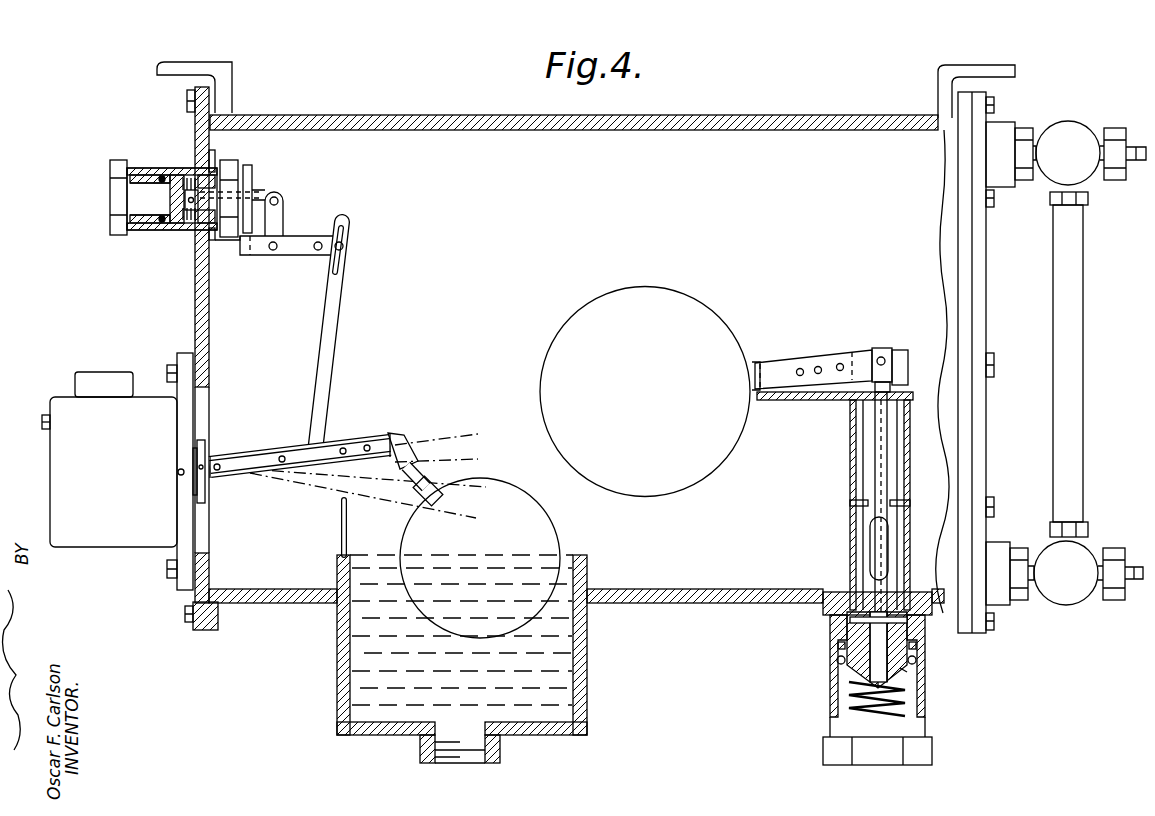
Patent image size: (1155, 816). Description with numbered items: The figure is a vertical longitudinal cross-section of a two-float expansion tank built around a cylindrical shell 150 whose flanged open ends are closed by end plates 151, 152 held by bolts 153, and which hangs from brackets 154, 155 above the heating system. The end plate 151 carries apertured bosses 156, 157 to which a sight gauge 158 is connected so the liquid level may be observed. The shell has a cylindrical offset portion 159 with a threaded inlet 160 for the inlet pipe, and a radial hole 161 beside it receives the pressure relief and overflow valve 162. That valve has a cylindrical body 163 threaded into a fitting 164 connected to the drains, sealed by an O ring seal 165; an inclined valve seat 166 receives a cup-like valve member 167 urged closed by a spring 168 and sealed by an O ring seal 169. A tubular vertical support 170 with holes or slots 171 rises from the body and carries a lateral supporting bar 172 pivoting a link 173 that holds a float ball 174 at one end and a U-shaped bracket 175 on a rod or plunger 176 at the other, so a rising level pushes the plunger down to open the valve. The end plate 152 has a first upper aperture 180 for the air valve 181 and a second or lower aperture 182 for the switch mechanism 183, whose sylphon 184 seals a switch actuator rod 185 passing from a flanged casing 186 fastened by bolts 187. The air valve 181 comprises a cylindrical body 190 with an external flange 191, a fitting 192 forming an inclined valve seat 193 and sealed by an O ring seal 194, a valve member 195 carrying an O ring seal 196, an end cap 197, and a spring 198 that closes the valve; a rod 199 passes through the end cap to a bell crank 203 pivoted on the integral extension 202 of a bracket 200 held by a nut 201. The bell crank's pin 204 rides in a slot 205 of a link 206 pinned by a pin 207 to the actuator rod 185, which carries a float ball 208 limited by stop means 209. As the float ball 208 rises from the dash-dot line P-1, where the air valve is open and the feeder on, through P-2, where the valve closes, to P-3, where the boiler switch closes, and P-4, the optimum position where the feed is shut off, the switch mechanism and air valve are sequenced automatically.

The cylindrical shell 150 is at (750, 118).
The end plate 151 is at (975, 268).
The end plate 152 is at (195, 307).
The bolts 153 is at (187, 98).
The bracket 154 is at (998, 70).
The bracket 155 is at (205, 62).
The apertured boss 156 is at (1003, 185).
The apertured boss 157 is at (1000, 600).
The sight gauge 158 is at (1090, 371).
The cylindrical offset portion 159 is at (586, 694).
The threaded inlet 160 is at (500, 757).
The radial hole 161 is at (838, 592).
The pressure relief and overflow valve 162 is at (821, 656).
The cylindrical body 163 is at (918, 640).
The fitting 164 is at (927, 712).
The O ring seal 165 is at (916, 660).
The inclined valve seat 166 is at (912, 665).
The valve member 167 is at (890, 690).
The spring 168 is at (847, 705).
The O ring seal 169 is at (832, 660).
The tubular vertical support 170 is at (852, 470).
The holes or slots 171 is at (870, 545).
The lateral supporting bar 172 is at (835, 352).
The link 173 is at (770, 370).
The float ball 174 is at (700, 308).
The U-shaped bracket 175 is at (888, 350).
The rod or plunger 176 is at (880, 432).
The first upper aperture 180 is at (207, 170).
The air valve 181 is at (101, 232).
The second or lower aperture 182 is at (210, 393).
The switch mechanism 183 is at (55, 385).
The sylphon 184 is at (205, 447).
The switch actuator rod 185 is at (278, 457).
The flanged casing 186 is at (108, 402).
The bolts 187 is at (172, 366).
The cylindrical body 190 is at (150, 168).
The external flange 191 is at (215, 160).
The fitting 192 is at (118, 176).
The inclined valve seat 193 is at (176, 180).
The O ring seal 194 is at (160, 176).
The valve member 195 is at (178, 216).
The O ring seal 196 is at (165, 228).
The end cap 197 is at (240, 165).
The spring 198 is at (196, 216).
The rod 199 is at (260, 196).
The bracket 200 is at (240, 252).
The nut 201 is at (255, 170).
The integral extension 202 is at (262, 258).
The bell crank 203 is at (282, 215).
The pin 204 is at (346, 246).
The slot 205 is at (340, 266).
The link 206 is at (330, 318).
The pin 207 is at (322, 447).
The float ball 208 is at (562, 537).
The stop means 209 is at (340, 523).
The lowermost float position P-1 is at (378, 500).
The float position P-2 is at (383, 483).
The float position P-3 is at (452, 458).
The optimum operating float position P-4 is at (452, 433).